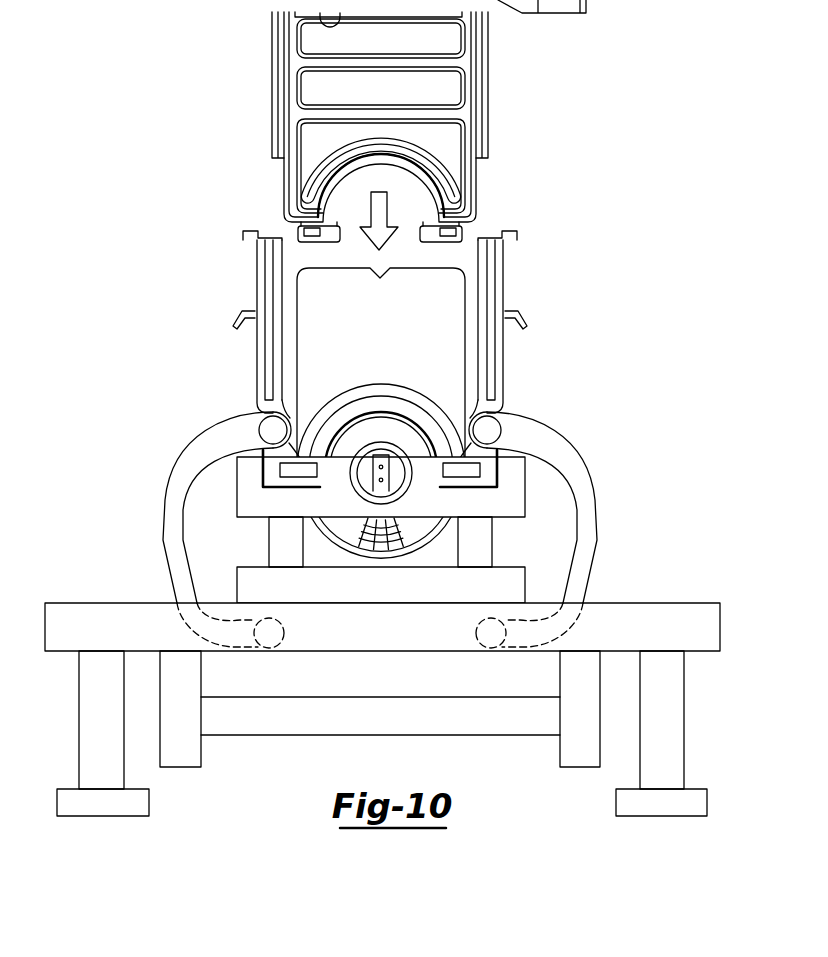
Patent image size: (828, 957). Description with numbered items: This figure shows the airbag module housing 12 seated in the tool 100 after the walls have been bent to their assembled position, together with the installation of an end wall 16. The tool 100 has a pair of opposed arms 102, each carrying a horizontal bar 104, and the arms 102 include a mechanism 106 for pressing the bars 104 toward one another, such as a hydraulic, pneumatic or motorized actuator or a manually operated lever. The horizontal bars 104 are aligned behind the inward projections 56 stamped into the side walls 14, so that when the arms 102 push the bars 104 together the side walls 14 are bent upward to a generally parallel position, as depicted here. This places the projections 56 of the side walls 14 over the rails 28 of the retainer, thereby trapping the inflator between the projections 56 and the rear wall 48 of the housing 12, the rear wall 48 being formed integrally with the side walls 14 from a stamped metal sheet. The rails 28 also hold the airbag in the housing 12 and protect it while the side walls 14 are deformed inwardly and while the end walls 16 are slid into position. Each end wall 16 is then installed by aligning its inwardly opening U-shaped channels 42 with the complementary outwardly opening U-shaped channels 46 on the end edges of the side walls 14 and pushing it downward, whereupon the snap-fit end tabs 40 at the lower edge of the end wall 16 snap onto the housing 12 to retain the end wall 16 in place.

The housing 12 is at (246, 358).
The side walls 14 is at (257, 266).
The end walls 16 is at (494, 76).
The rails 28 is at (268, 465).
The snap-fit end tabs 40 is at (322, 230).
The U-shaped channels 42 is at (276, 93).
The U-shaped channels 46 is at (270, 233).
The rear wall 48 is at (381, 560).
The inward projections 56 is at (302, 430).
The tool 100 is at (117, 596).
The arms 102 is at (205, 490).
The horizontal bar 104 is at (265, 420).
The mechanism 106 is at (288, 735).